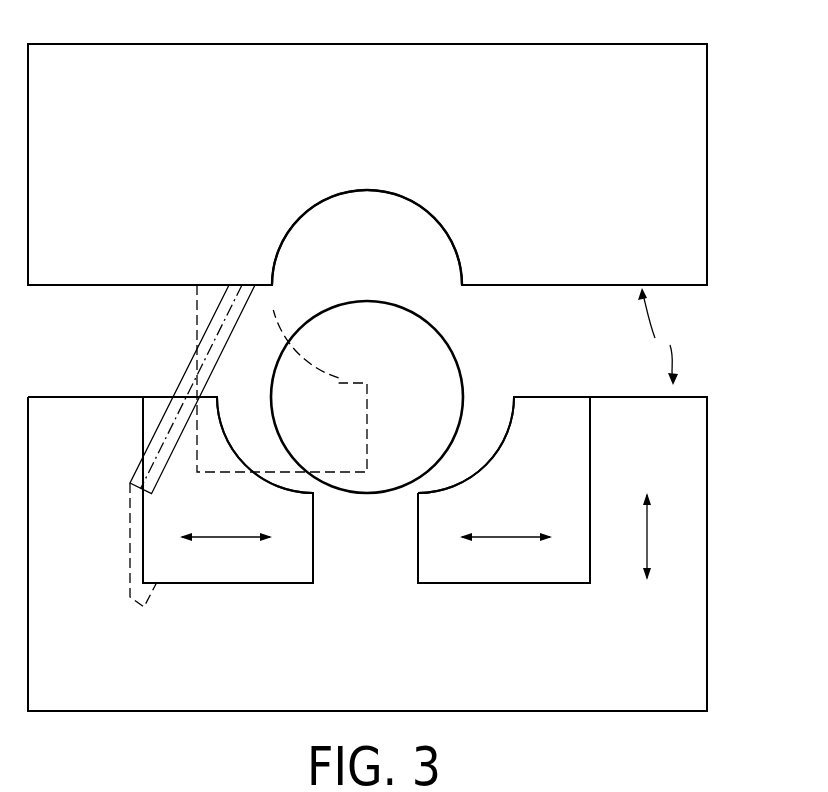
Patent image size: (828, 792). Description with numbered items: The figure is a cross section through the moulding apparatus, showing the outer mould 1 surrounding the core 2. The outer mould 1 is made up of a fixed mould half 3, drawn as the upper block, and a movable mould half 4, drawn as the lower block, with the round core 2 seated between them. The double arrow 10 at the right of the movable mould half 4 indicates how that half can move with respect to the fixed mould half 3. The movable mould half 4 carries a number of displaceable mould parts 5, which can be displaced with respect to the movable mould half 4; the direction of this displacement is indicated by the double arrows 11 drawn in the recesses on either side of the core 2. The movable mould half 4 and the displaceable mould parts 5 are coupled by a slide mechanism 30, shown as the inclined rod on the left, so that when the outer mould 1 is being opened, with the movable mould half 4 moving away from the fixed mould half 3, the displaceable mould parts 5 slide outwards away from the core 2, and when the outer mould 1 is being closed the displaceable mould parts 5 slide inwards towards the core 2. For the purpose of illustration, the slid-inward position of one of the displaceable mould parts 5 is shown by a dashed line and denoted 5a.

The outer mould 1 is at (658, 336).
The core 2 is at (432, 345).
The fixed mould half 3 is at (690, 149).
The movable mould half 4 is at (692, 650).
The displaceable mould parts 5 is at (155, 413).
The slid-inward position of displaceable mould part 5a is at (215, 298).
The double arrow 10 is at (648, 546).
The double arrows 11 is at (237, 537).
The slide mechanism 30 is at (204, 336).